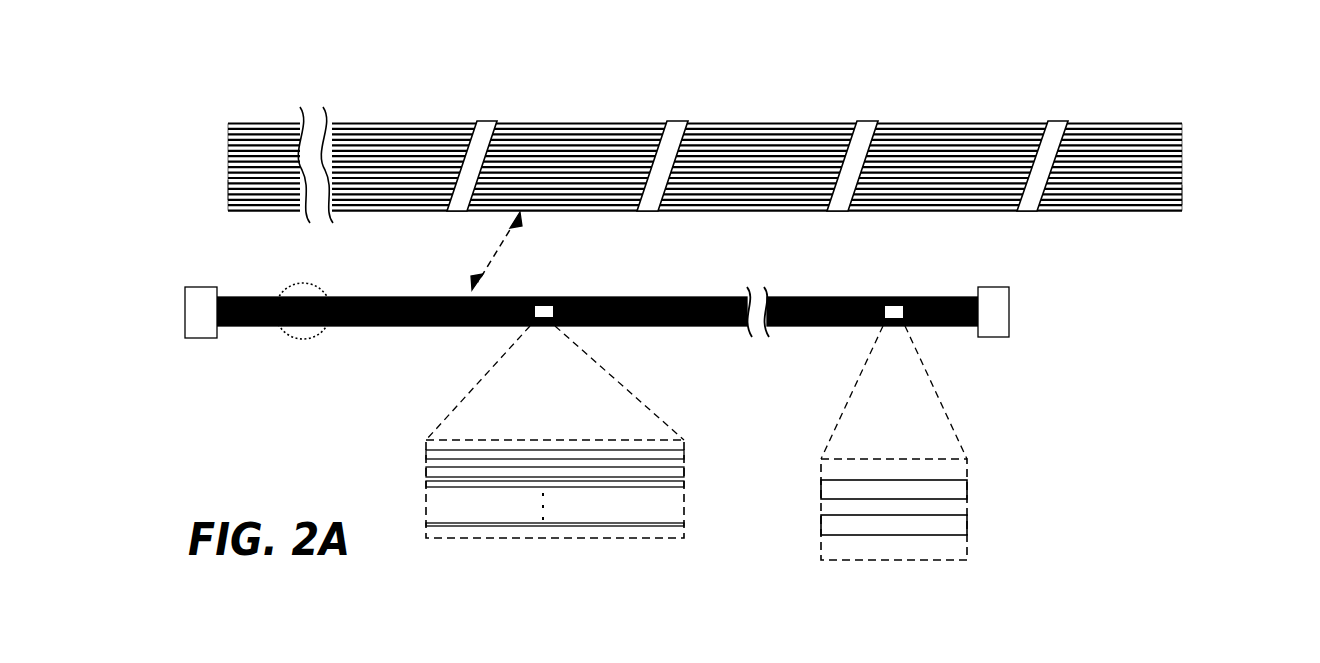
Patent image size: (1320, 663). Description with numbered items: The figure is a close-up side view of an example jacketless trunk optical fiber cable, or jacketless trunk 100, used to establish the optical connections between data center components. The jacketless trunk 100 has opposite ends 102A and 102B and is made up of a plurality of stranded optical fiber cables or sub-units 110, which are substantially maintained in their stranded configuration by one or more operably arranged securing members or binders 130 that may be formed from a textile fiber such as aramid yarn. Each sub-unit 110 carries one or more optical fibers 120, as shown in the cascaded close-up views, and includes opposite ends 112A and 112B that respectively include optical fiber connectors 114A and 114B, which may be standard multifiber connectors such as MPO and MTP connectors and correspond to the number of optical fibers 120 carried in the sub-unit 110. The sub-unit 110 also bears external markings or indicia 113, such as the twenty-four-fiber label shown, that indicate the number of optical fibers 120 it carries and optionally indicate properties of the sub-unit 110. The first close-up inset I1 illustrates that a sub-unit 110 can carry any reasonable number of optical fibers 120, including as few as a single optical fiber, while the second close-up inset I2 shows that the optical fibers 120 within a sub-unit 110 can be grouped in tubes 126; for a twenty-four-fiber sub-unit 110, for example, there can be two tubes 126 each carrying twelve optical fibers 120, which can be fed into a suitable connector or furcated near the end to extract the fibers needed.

The jacketless trunk optical fiber cable 100 is at (700, 224).
The first end of jacketless trunk 102A is at (196, 143).
The second end of jacketless trunk 102B is at (1200, 128).
The sub-unit 110 is at (608, 142).
The first end of sub-unit 112A is at (228, 200).
The second end of sub-unit 112B is at (1182, 205).
The external markings or indicia 113 is at (303, 338).
The first optical fiber connector 114A is at (200, 287).
The second optical fiber connector 114B is at (993, 287).
The optical fibers 120 is at (613, 525).
The tubes 126 is at (947, 480).
The securing members or binders 130 is at (487, 121).
The first close-up inset I1 is at (426, 476).
The second close-up inset I2 is at (967, 500).